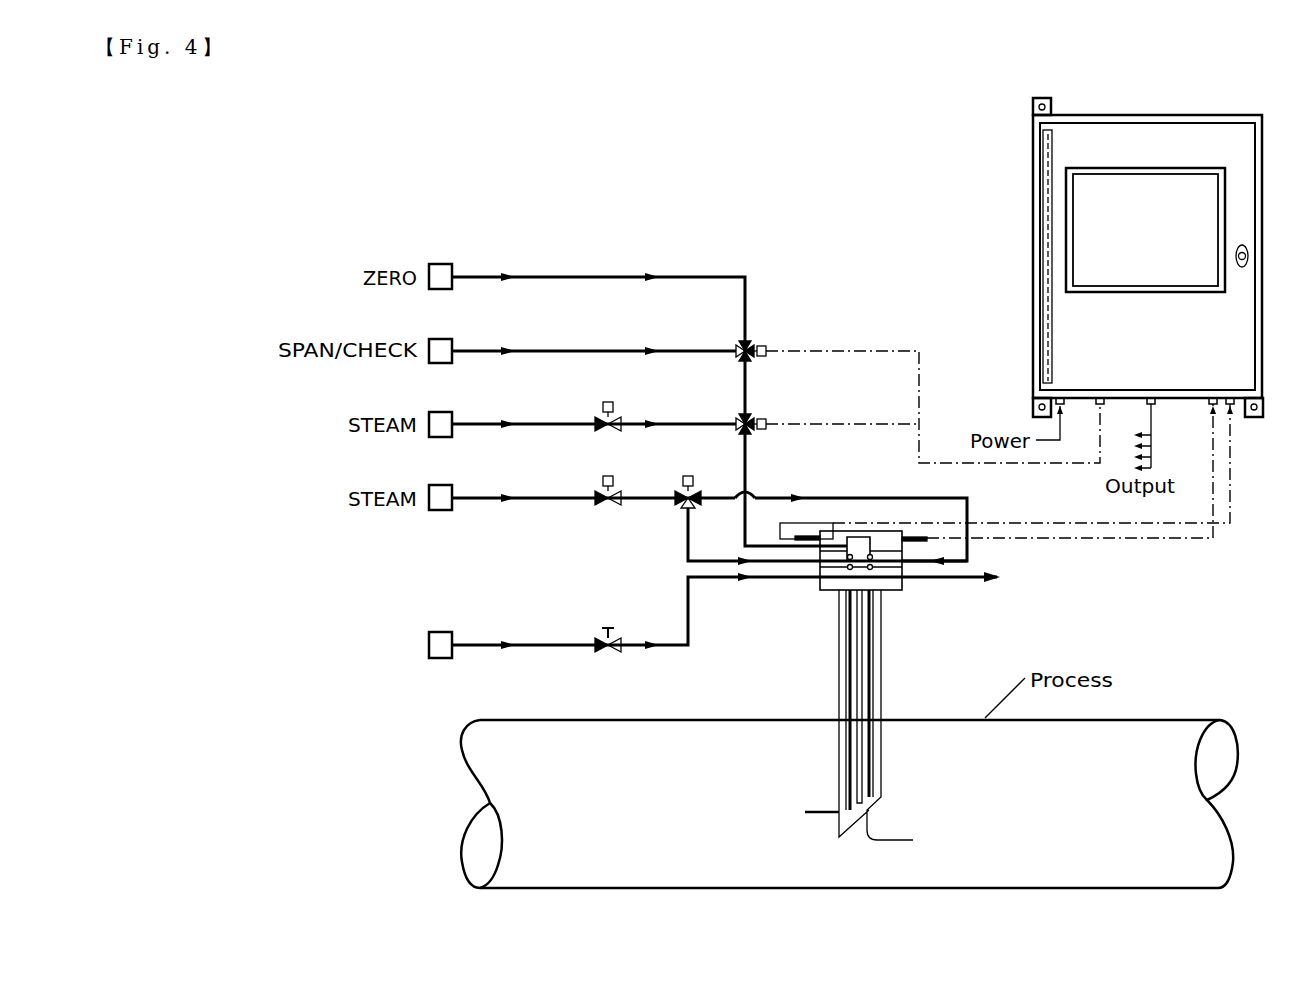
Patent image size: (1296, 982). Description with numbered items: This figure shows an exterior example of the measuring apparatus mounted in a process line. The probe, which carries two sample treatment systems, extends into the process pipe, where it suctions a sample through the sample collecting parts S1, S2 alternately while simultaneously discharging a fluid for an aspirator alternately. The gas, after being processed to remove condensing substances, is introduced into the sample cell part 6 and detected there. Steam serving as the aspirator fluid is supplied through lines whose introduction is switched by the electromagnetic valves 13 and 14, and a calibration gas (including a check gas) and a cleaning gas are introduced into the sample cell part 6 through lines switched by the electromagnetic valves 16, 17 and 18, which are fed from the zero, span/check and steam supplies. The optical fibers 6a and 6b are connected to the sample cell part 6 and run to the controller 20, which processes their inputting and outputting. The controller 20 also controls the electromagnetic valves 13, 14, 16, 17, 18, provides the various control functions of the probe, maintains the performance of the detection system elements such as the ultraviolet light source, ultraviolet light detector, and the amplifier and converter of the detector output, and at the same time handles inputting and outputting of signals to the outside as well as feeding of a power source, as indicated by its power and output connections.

The sample cell part 6 is at (870, 537).
The optical fiber 6a is at (810, 536).
The optical fiber 6b is at (916, 537).
The electromagnetic valve 13 is at (603, 477).
The electromagnetic valve 14 is at (683, 477).
The electromagnetic valve 16 is at (766, 346).
The electromagnetic valve 17 is at (600, 403).
The electromagnetic valve 18 is at (770, 420).
The controller 20 is at (1033, 250).
The sample collecting part S1 is at (805, 812).
The sample collecting part S2 is at (913, 840).